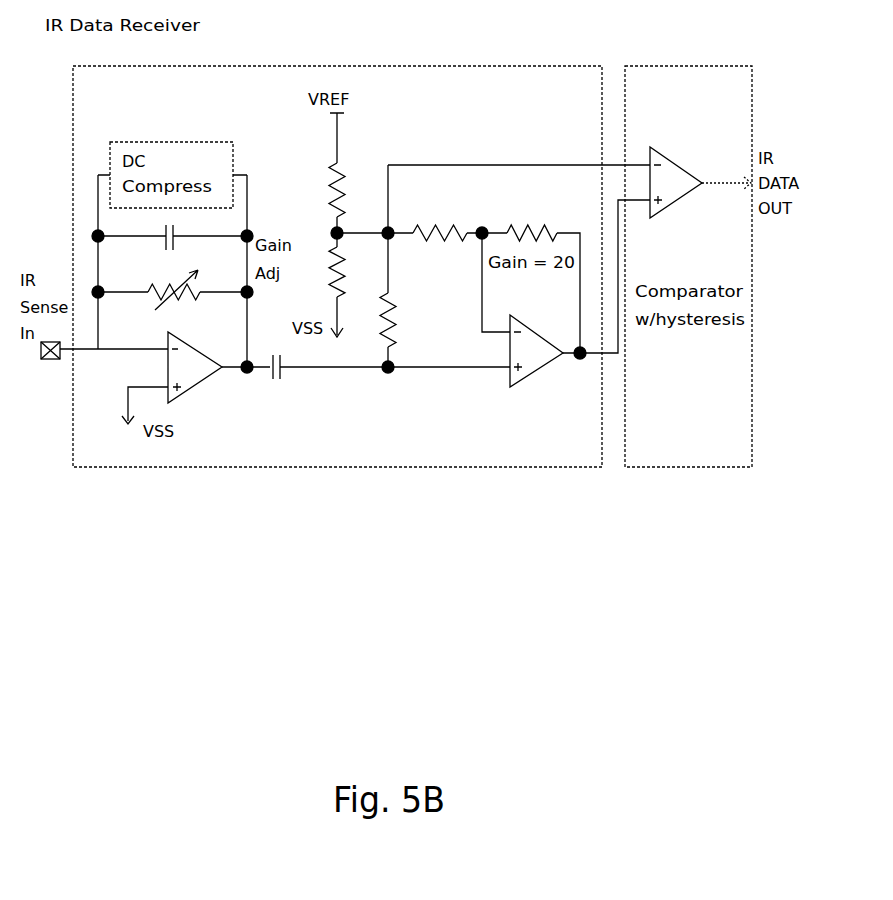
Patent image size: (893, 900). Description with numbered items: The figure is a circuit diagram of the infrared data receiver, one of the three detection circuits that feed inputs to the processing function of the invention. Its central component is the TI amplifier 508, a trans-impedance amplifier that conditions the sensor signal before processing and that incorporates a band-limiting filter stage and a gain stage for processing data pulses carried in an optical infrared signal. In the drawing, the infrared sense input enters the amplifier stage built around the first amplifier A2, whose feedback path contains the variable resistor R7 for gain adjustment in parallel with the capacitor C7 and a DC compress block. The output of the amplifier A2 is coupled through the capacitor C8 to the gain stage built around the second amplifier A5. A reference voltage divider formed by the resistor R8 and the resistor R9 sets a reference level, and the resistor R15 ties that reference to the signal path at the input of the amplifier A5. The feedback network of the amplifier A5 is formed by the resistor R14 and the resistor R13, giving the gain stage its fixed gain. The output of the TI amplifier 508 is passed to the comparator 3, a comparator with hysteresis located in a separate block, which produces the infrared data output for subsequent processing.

The TI amplifier 508 is at (200, 468).
The comparator with hysteresis 3 is at (676, 179).
The capacitor C7 is at (172, 232).
The variable resistor R7 (gain adjust) R7 is at (172, 285).
The amplifier A2 is at (195, 364).
The capacitor C8 is at (366, 355).
The resistor R8 is at (354, 190).
The resistor R9 is at (353, 272).
The resistor R15 is at (410, 320).
The resistor R14 is at (440, 221).
The resistor R13 is at (532, 221).
The amplifier A5 is at (536, 347).